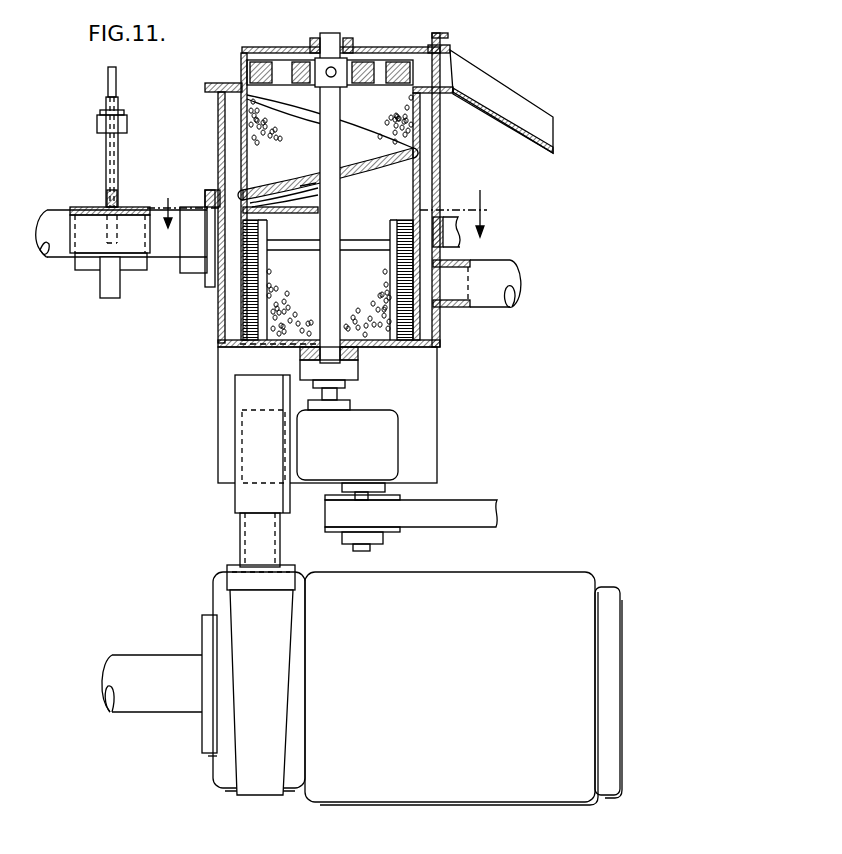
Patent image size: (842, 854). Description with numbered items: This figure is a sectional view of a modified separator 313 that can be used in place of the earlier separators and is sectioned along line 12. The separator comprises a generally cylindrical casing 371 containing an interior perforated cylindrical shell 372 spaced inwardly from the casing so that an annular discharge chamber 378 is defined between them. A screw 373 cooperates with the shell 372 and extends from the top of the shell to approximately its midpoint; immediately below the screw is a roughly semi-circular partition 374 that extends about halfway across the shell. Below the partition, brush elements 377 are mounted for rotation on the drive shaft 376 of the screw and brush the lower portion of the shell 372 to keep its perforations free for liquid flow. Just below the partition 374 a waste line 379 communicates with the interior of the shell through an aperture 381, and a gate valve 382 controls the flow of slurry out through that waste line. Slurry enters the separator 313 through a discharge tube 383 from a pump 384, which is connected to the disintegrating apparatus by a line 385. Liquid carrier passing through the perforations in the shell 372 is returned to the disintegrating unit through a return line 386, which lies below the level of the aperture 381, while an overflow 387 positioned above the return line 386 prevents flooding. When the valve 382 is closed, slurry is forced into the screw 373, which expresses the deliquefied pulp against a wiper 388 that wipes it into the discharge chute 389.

The section line 12- 12 is at (329, 207).
The separator 313 is at (217, 138).
The casing 371 is at (437, 162).
The perforated cylindrical shell 372 is at (420, 187).
The screw 373 is at (378, 155).
The partition 374 is at (302, 214).
The drive shaft 376 is at (320, 143).
The brush elements 377 is at (400, 258).
The annular discharge chamber 378 is at (232, 300).
The waste line 379 is at (168, 258).
The aperture 381 is at (206, 222).
The gate valve 382 is at (103, 205).
The discharge tube 383 is at (253, 522).
The pump 384 is at (447, 694).
The line 385 is at (146, 660).
The return line 386 is at (496, 296).
The overflow 387 is at (465, 243).
The wiper 388 is at (386, 67).
The discharge chute 389 is at (508, 102).